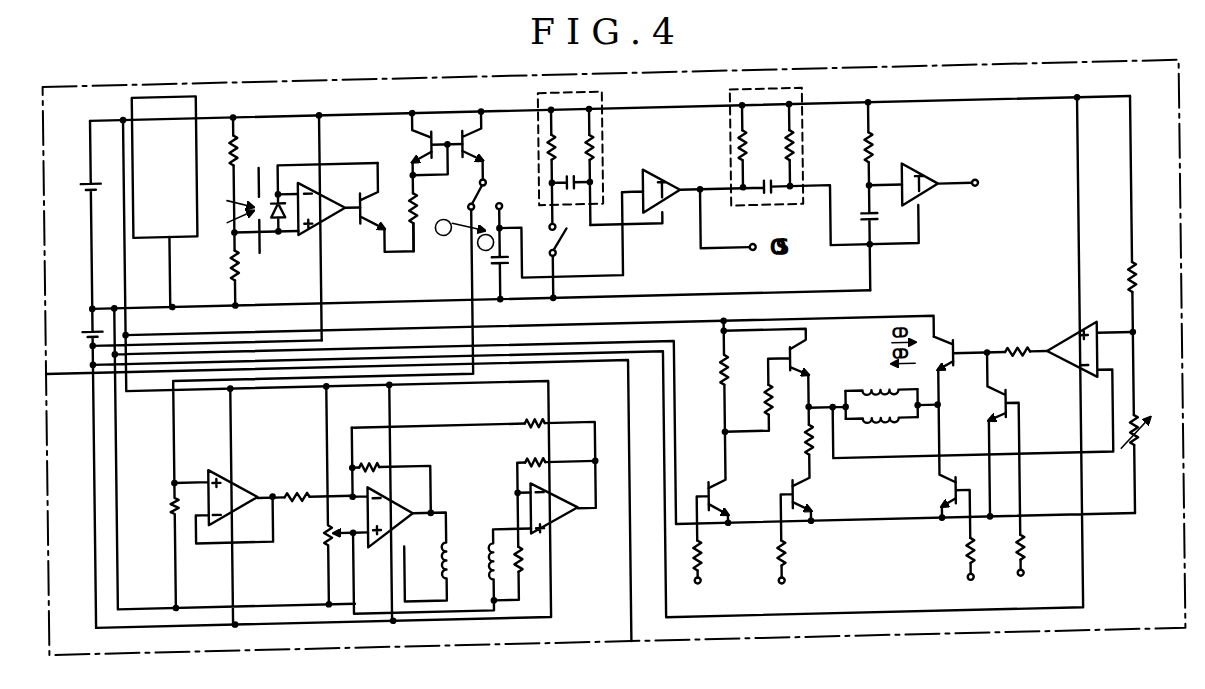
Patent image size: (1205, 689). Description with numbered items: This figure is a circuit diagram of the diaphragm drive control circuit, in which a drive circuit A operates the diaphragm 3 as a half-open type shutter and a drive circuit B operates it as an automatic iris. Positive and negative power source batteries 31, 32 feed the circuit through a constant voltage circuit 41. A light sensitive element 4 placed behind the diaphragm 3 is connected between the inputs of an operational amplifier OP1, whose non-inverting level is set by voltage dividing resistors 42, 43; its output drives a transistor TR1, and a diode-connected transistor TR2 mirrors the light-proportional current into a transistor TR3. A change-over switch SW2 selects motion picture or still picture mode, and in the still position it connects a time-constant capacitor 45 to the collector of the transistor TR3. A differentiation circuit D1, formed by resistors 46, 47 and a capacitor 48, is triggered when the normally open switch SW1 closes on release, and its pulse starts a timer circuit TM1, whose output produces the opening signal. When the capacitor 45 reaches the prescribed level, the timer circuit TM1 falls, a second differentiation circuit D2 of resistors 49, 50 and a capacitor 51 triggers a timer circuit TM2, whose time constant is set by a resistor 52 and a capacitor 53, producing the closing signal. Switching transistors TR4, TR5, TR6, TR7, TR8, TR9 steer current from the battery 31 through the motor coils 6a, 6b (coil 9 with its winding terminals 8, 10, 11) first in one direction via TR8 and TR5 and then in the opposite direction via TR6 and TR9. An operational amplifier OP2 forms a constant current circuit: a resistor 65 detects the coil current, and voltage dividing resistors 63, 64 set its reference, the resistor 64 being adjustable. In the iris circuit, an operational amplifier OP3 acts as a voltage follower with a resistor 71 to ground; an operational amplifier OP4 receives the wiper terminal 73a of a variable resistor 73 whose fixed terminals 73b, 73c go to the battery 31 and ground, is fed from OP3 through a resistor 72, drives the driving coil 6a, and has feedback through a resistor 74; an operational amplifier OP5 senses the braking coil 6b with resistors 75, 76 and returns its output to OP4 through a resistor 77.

The diaphragm 3 is at (232, 237).
The light sensitive element 4 is at (283, 241).
The positive power source battery 31 is at (77, 182).
The negative power source battery 32 is at (84, 331).
The constant voltage circuit 41 is at (197, 104).
The voltage dividing resistor 42 is at (240, 156).
The voltage dividing resistor 43 is at (243, 278).
The capacitor for time constant 45 is at (486, 277).
The resistor 46 is at (573, 156).
The resistor 47 is at (594, 166).
The capacitor 48 is at (617, 194).
The resistor 49 is at (745, 166).
The resistor 50 is at (795, 168).
The capacitor 51 is at (773, 196).
The resistor 52 is at (876, 170).
The capacitor 53 is at (877, 249).
The voltage dividing resistor 63 is at (1145, 287).
The voltage dividing resistor 64 is at (1150, 462).
The resistor 65 is at (800, 462).
The resistor 71 is at (166, 505).
The resistor 72 is at (296, 494).
The variable resistor 73 is at (323, 540).
The variable terminal 73a is at (345, 546).
The fixed terminal 73b is at (327, 530).
The fixed terminal 73c is at (327, 555).
The resistor 74 is at (362, 470).
The resistor 75 is at (518, 568).
The resistor 76 is at (538, 467).
The resistor 77 is at (536, 428).
The diaphragm driving coil 6a is at (878, 407).
The diaphragm braking coil 6b is at (893, 446).
The coil terminal 8 is at (912, 410).
The coil 9 is at (843, 408).
The coil terminal 10 is at (912, 447).
The coil terminal 11 is at (847, 441).
The transistor TR1 is at (377, 230).
The transistor TR2 is at (410, 160).
The transistor TR3 is at (478, 157).
The switching transistor TR4 is at (720, 494).
The switching transistor TR5 is at (808, 506).
The switching transistor TR6 is at (802, 372).
The switching transistor TR7 is at (988, 421).
The switching transistor TR8 is at (947, 360).
The switching transistor TR9 is at (943, 510).
The operational amplifier OP1 is at (328, 234).
The operational amplifier OP2 is at (1067, 386).
The operational amplifier OP3 is at (243, 479).
The operational amplifier OP4 is at (414, 530).
The operational amplifier OP5 is at (566, 525).
The normally open switch SW1 is at (566, 244).
The change-over switch SW2 is at (497, 206).
The timer circuit TM1 is at (655, 180).
The timer circuit TM2 is at (940, 200).
The differentiation circuit D1 is at (568, 153).
The differentiation circuit D2 is at (798, 160).
The drive circuit A is at (1078, 84).
The drive circuit B is at (537, 654).